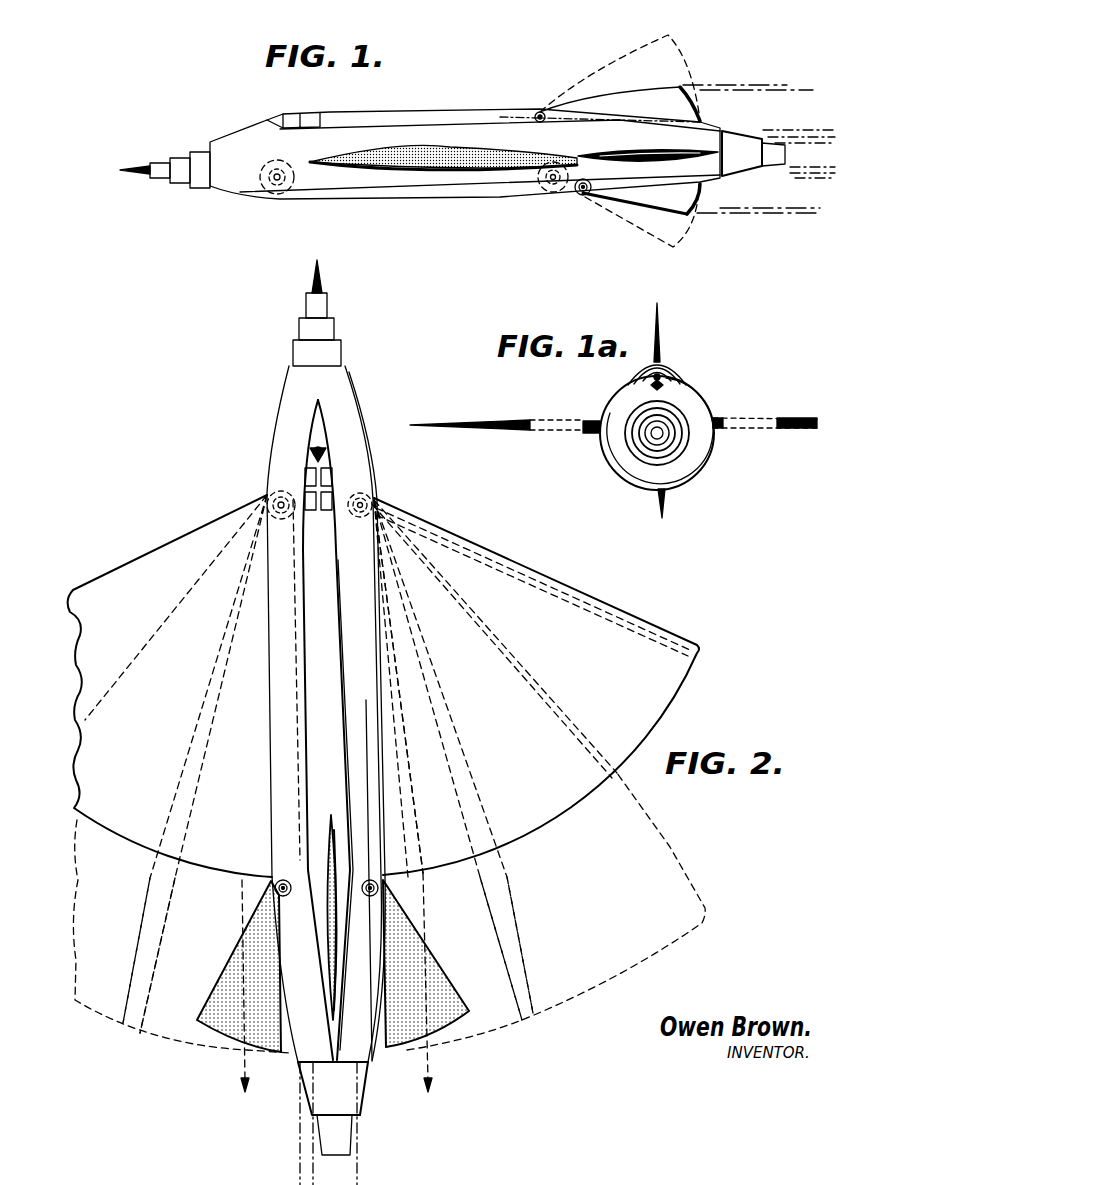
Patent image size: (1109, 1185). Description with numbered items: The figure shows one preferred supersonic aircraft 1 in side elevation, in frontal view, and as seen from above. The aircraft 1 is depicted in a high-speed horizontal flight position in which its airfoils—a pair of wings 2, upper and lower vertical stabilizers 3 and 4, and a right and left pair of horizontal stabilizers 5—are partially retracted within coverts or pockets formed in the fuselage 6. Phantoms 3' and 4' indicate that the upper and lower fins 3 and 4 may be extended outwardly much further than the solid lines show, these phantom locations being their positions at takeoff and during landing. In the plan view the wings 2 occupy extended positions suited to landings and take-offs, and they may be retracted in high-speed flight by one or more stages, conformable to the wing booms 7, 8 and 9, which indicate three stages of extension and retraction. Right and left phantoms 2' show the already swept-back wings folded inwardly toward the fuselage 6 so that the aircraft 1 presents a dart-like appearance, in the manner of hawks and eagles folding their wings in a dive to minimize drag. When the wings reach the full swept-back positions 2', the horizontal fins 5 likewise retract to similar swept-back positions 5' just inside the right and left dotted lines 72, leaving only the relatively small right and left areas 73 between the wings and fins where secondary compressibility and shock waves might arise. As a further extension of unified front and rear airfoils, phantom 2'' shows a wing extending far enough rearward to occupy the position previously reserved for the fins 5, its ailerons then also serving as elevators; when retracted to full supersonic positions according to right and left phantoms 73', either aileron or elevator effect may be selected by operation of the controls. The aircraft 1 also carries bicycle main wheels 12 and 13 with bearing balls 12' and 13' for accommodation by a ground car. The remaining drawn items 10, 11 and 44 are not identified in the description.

In FIG. 1, the aircraft 1 is at (220, 124).
In FIG. 2, the aircraft 1 is at (250, 452).
In FIG. 1, the wings 2 is at (443, 186).
In FIG. 1A, the wings 2 is at (613, 409).
In FIG. 2, the wings 2 is at (536, 686).
In FIG. 2, the phantom wing positions 2' is at (296, 764).
In FIG. 2, the phantom wing position 2'' is at (411, 913).
In FIG. 1, the upper vertical stabilizer 3 is at (617, 90).
In FIG. 1A, the upper vertical stabilizer 3 is at (672, 410).
In FIG. 2, the upper vertical stabilizer 3 is at (326, 869).
In FIG. 1, the phantom upper stabilizer position 3' is at (620, 65).
In FIG. 1, the lower vertical stabilizer 4 is at (641, 223).
In FIG. 1, the phantom lower stabilizer position 4' is at (655, 221).
In FIG. 1, the horizontal stabilizers 5 is at (648, 143).
In FIG. 1A, the horizontal stabilizers 5 is at (576, 410).
In FIG. 2, the horizontal stabilizers 5 is at (228, 966).
In FIG. 2, the swept-back fin positions 5' is at (429, 963).
In FIG. 1, the fuselage 6 is at (488, 134).
In FIG. 1A, the fuselage 6 is at (657, 427).
In FIG. 2, the fuselage 6 is at (370, 738).
In FIG. 2, the wing boom 7 is at (571, 596).
In FIG. 2, the wing boom 8 is at (545, 700).
In FIG. 2, the wing boom 9 is at (455, 794).
In FIG. 2, the left wing 10 is at (150, 568).
In FIG. 2, the central fin 11 is at (345, 795).
In FIG. 1, the bicycle main wheel 12 is at (269, 194).
In FIG. 1, the bearing ball 12' is at (252, 167).
In FIG. 1, the bicycle main wheel 13 is at (526, 194).
In FIG. 1, the bearing ball 13' is at (565, 205).
In FIG. 2, the wing hinge 44 is at (264, 495).
In FIG. 2, the dotted lines 72 is at (242, 889).
In FIG. 2, the areas 73 is at (400, 694).
In FIG. 2, the phantom retracted positions 73' is at (335, 955).